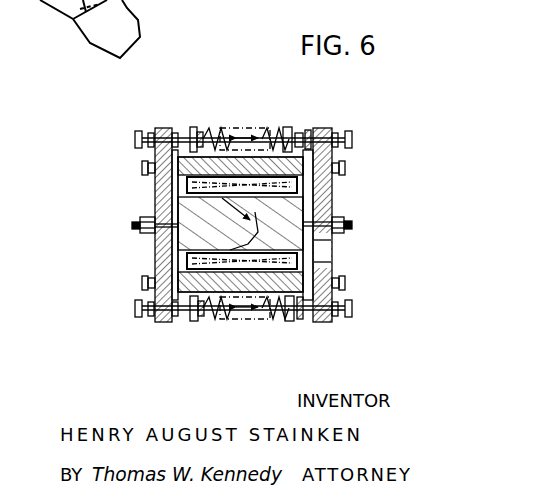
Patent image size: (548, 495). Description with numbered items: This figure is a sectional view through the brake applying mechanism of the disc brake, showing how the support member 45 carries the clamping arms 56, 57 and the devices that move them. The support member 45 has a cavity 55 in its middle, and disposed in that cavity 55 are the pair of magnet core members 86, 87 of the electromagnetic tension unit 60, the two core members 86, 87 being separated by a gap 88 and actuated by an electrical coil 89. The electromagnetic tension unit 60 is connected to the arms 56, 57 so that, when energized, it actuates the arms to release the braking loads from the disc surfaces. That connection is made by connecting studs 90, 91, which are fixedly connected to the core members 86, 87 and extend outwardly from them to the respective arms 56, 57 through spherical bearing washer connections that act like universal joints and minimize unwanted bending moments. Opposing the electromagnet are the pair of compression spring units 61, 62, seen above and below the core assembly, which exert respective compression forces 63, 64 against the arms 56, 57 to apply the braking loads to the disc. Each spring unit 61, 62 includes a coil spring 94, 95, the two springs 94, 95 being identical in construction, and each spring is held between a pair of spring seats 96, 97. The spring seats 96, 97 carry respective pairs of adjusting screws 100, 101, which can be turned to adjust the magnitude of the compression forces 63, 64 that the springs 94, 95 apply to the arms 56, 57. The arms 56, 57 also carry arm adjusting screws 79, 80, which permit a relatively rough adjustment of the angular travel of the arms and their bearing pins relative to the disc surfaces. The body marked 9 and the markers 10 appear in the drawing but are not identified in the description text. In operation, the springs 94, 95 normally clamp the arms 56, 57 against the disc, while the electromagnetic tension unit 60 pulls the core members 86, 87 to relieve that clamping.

The gauge block body 9 is at (187, 224).
The adjusting direction indicator 10 is at (211, 130).
The support member 45 is at (335, 156).
The cavity 55 is at (306, 130).
The clamping arm 56 is at (158, 238).
The clamping arm 57 is at (333, 253).
The electromagnetic tension unit 60 is at (333, 246).
The compression spring unit 61 is at (205, 331).
The compression spring unit 62 is at (200, 126).
The compression force 63 is at (248, 311).
The compression force 64 is at (249, 136).
The arm adjusting screw 79 is at (142, 167).
The arm adjusting screw 80 is at (346, 166).
The magnet core member 86 is at (252, 228).
The magnet core member 87 is at (296, 248).
The gap 88 is at (250, 220).
The electrical coil 89 is at (305, 260).
The connecting stud 90 is at (150, 233).
The connecting stud 91 is at (340, 215).
The coil spring 94 is at (268, 320).
The coil spring 95 is at (245, 128).
The spring seats 96 is at (192, 320).
The spring seats 97 is at (192, 127).
The adjusting screws 100 is at (135, 312).
The adjusting screws 101 is at (139, 130).